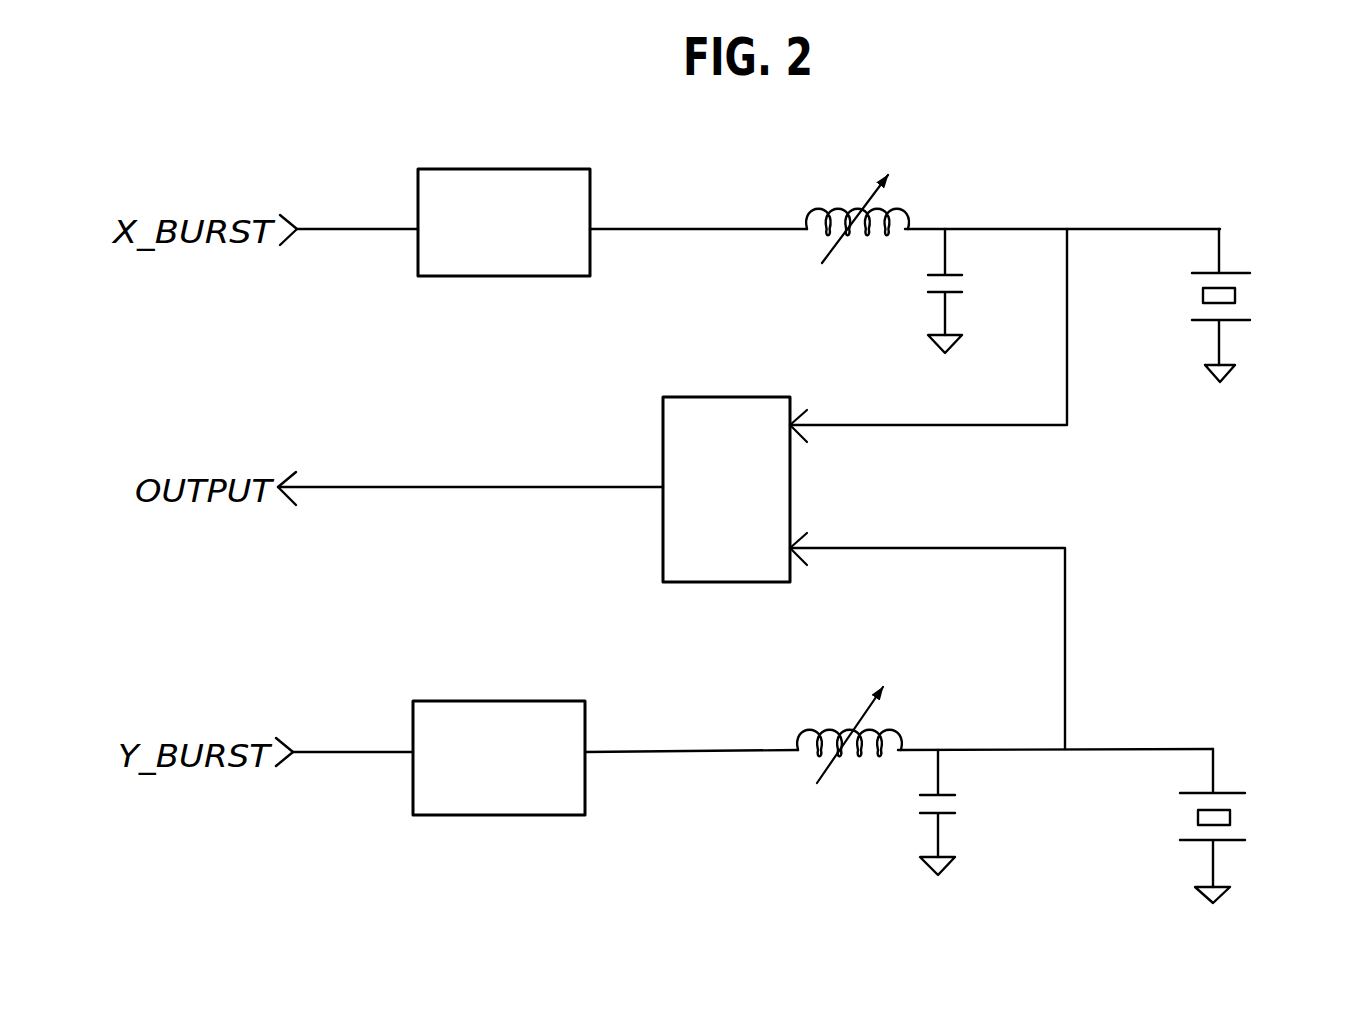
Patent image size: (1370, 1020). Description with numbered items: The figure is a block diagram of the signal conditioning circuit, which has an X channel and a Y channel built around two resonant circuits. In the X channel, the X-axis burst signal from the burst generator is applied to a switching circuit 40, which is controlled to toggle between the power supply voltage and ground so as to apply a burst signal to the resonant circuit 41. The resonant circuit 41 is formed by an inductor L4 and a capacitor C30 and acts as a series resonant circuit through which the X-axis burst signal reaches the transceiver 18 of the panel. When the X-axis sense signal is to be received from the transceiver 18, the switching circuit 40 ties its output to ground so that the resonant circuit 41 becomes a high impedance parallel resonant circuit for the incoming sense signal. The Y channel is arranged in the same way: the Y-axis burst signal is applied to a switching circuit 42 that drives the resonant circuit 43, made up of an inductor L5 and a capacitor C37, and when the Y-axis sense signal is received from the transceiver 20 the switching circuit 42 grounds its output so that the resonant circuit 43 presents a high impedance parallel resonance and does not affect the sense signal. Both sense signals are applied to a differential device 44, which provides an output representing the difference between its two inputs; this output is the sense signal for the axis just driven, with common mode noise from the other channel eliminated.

The switching circuit 40 is at (515, 177).
The resonant circuit 41 is at (903, 200).
The switching circuit 42 is at (512, 707).
The resonant circuit 43 is at (849, 759).
The differential device 44 is at (780, 485).
The transceiver 18 is at (1258, 290).
The transceiver 20 is at (1245, 806).
The inductor L4 is at (857, 200).
The inductor L5 is at (849, 719).
The capacitor C30 is at (982, 291).
The capacitor C37 is at (977, 812).